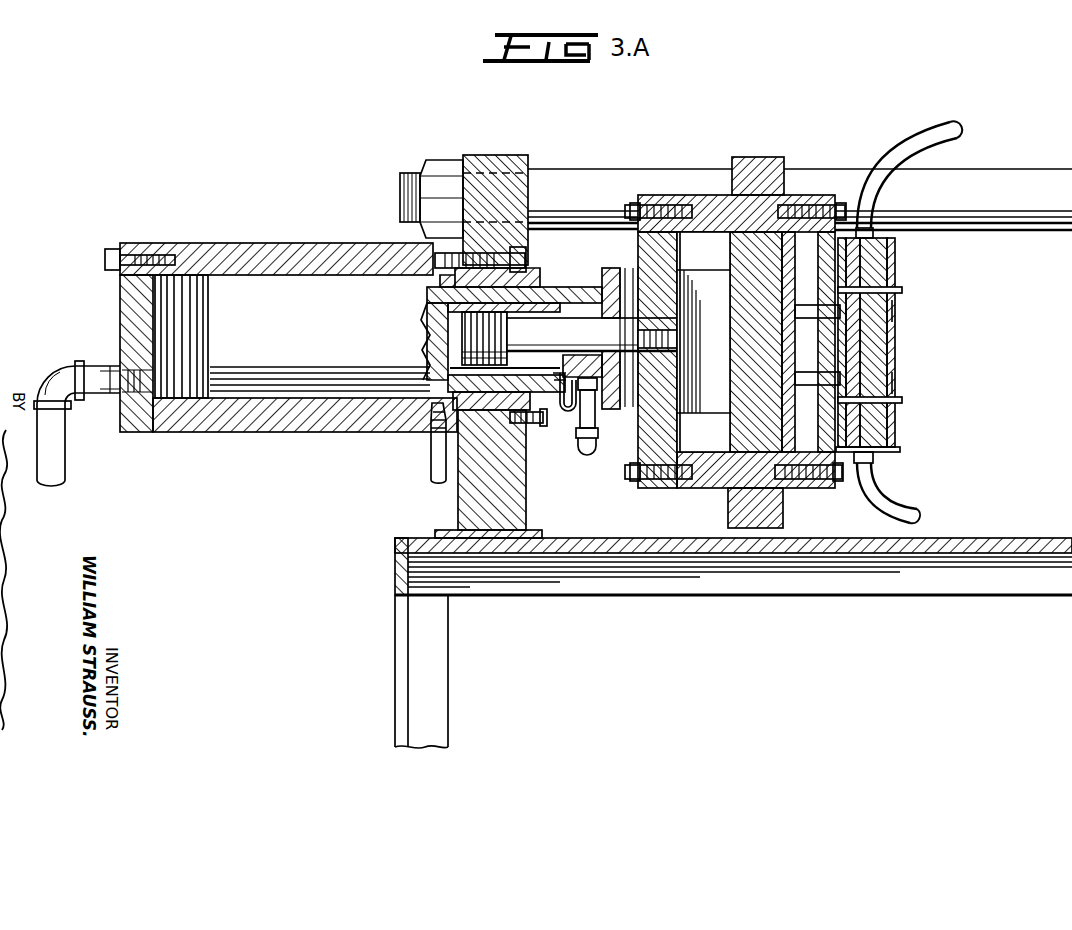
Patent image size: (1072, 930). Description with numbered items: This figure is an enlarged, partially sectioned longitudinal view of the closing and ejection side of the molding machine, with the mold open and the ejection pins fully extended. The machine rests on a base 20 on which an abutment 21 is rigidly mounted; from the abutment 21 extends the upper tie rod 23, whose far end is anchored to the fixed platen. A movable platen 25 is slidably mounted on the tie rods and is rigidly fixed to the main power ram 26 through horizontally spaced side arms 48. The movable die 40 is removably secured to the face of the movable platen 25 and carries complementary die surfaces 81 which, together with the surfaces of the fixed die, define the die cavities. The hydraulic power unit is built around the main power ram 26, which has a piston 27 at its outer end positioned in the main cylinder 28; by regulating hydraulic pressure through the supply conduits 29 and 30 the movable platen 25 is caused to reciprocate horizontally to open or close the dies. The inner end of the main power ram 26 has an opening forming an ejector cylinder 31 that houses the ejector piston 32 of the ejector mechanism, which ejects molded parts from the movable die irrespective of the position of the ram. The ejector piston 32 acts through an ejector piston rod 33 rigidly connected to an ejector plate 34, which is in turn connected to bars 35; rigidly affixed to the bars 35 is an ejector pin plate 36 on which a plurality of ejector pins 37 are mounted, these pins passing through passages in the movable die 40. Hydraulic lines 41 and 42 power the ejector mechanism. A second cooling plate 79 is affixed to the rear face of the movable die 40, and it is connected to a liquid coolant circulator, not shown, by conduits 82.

The base 20 is at (395, 608).
The abutment 21 is at (486, 155).
The upper tie rod 23 is at (578, 167).
The movable platen 25 is at (766, 157).
The main power ram 26 is at (570, 288).
The piston 27 is at (190, 400).
The main cylinder 28 is at (275, 243).
The supply conduit 29 is at (425, 465).
The supply conduit 30 is at (68, 462).
The ejector cylinder 31 is at (548, 425).
The ejector piston 32 is at (415, 413).
The ejector piston rod 33 is at (604, 320).
The ejector plate 34 is at (637, 437).
The bars 35 is at (698, 195).
The ejector pin plate 36 is at (824, 488).
The ejector pins 37 is at (898, 290).
The movable die 40 is at (898, 340).
The hydraulic line 41 is at (566, 440).
The hydraulic line 42 is at (585, 452).
The side arms 48 is at (702, 275).
The second cooling plate 79 is at (900, 455).
The die surfaces 81 is at (898, 312).
The conduits 82 is at (900, 128).